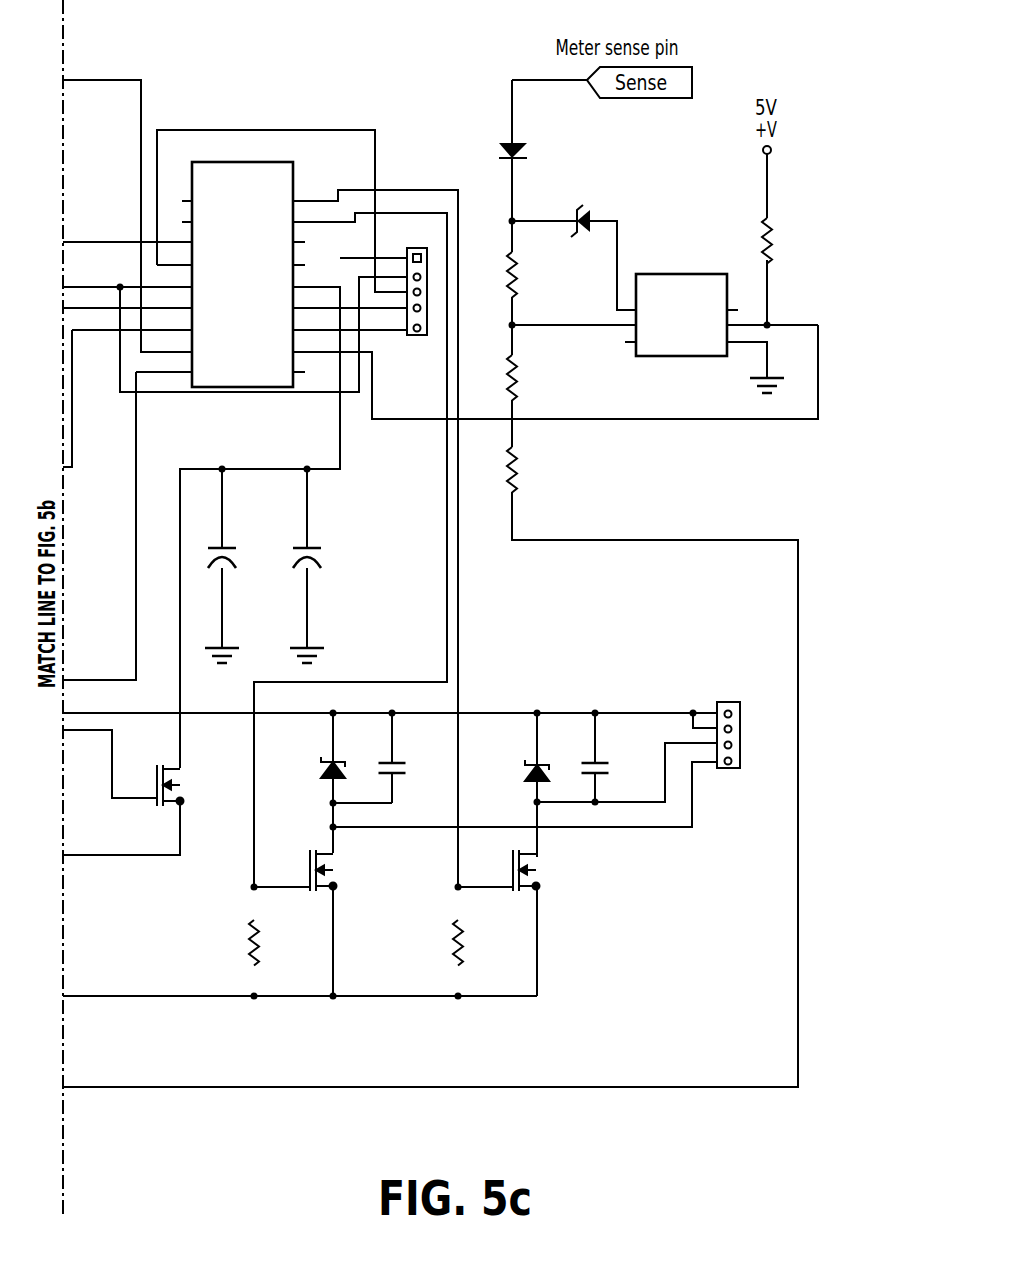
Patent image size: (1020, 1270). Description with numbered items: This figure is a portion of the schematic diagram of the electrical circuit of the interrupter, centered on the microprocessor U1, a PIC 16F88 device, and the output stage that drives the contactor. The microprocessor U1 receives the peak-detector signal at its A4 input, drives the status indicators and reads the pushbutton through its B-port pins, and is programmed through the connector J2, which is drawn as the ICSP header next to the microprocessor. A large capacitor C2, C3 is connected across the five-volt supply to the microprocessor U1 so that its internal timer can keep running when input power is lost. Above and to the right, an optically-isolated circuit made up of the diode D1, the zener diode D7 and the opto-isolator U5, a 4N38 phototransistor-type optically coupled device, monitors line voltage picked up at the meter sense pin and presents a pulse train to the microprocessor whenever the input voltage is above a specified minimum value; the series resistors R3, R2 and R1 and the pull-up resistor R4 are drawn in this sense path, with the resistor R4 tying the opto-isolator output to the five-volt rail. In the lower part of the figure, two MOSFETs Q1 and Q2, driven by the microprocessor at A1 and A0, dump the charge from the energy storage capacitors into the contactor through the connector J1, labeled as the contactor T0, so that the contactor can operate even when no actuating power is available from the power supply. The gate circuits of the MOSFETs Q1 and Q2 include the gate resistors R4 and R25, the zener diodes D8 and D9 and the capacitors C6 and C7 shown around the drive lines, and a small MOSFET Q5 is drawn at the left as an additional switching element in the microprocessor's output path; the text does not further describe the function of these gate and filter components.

The microprocessor U1 is at (242, 261).
The connector J2 is at (405, 296).
The diode of optically-isolated circuit D1 is at (492, 150).
The diode of optically-isolated circuit D7 is at (583, 194).
The resistor 1.2k R3 is at (533, 276).
The resistor 10k 3W R2 is at (554, 378).
The resistor 10k 3W R1 is at (554, 469).
The opto-isolator U5 is at (681, 301).
The resistor 10k R4 is at (628, 589).
The large capacitor C2 is at (229, 546).
The large capacitor C3 is at (302, 546).
The MOSFET IRLML2803 Q5 is at (130, 809).
The zener diode 1N4749 D9 is at (302, 782).
The capacitor .1uF C6 is at (413, 768).
The zener diode 1N4749 D8 is at (506, 781).
The capacitor .1uF C7 is at (617, 768).
The MOSFET Q2 is at (359, 867).
The MOSFET Q1 is at (562, 867).
The resistor 10K R25 is at (273, 942).
The connector J1 is at (728, 721).
The contactor T0 is at (729, 653).